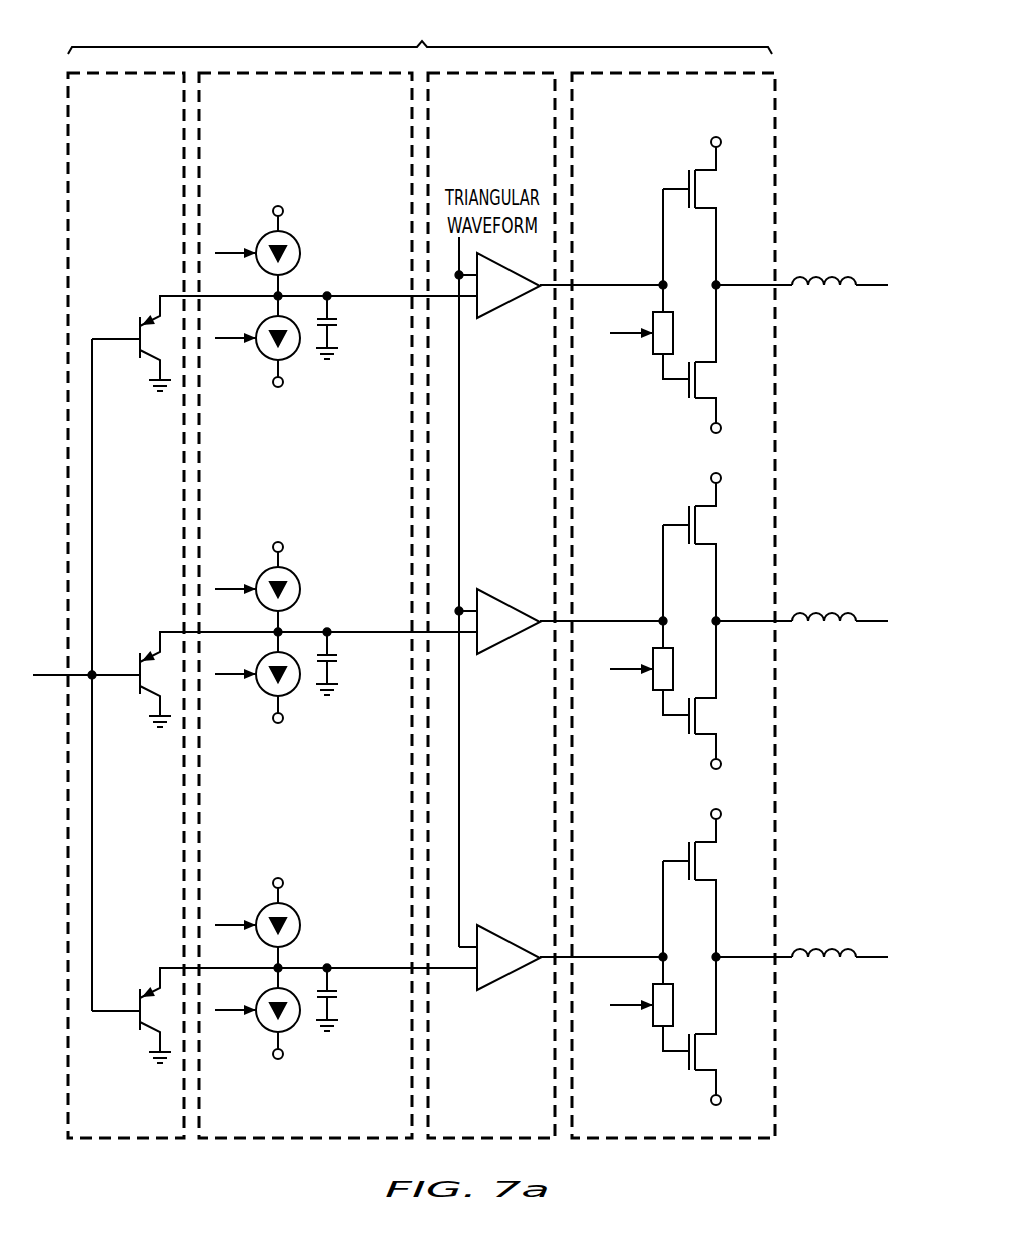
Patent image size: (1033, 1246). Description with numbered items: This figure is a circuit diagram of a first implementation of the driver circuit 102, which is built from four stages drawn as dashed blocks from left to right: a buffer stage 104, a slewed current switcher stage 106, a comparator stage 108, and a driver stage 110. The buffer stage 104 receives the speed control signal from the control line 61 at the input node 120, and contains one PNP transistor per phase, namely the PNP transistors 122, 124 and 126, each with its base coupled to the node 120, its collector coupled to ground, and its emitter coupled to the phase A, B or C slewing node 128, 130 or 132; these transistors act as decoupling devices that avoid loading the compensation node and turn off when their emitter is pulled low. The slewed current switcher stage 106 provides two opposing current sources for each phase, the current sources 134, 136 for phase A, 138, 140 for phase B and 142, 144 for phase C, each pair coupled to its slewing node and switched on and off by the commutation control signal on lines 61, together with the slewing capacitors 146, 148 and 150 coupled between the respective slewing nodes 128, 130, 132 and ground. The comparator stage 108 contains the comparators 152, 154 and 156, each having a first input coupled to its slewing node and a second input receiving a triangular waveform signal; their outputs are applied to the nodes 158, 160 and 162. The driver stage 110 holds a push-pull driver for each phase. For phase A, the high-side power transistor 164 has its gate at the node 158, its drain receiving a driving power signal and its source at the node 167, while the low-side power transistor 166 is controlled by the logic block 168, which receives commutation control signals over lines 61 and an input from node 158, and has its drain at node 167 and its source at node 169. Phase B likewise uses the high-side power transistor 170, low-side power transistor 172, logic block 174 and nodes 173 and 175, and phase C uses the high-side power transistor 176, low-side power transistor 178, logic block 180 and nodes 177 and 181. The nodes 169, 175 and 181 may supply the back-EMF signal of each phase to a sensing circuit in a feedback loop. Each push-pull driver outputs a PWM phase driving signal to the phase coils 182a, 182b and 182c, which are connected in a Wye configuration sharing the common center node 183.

The control line 61 is at (55, 678).
The driver circuit 102 is at (420, 34).
The buffer stage 104 is at (142, 114).
The slewed current switcher stage 106 is at (322, 114).
The comparator stage 108 is at (509, 114).
The driver stage 110 is at (690, 114).
The input node 120 is at (95, 680).
The PNP transistor 122 is at (143, 322).
The PNP transistor 124 is at (284, 666).
The PNP transistor 126 is at (279, 1015).
The phase A slewing node 128 is at (327, 290).
The phase B slewing node 130 is at (337, 615).
The phase C slewing node 132 is at (337, 951).
The current source 134 is at (292, 240).
The current source 136 is at (290, 356).
The current source 138 is at (273, 581).
The current source 140 is at (273, 682).
The current source 142 is at (273, 917).
The current source 144 is at (273, 1018).
The slewing capacitor 146 is at (340, 322).
The slewing capacitor 148 is at (356, 675).
The slewing capacitor 150 is at (356, 1011).
The comparator 152 is at (505, 306).
The comparator 154 is at (559, 639).
The comparator 156 is at (561, 975).
The node 158 is at (660, 283).
The node 160 is at (642, 586).
The node 162 is at (642, 922).
The high-side power transistor 164 is at (687, 182).
The low-side power transistor 166 is at (687, 388).
The node 167 is at (720, 283).
The logic block 168 is at (652, 318).
The node 169 is at (712, 431).
The high-side power transistor 170 is at (672, 547).
The low-side power transistor 172 is at (670, 690).
The node 173 is at (752, 599).
The logic block 174 is at (639, 672).
The node 175 is at (683, 772).
The high-side power transistor 176 is at (672, 883).
The node 177 is at (752, 935).
The low-side power transistor 178 is at (670, 1026).
The logic block 180 is at (639, 1008).
The node 181 is at (683, 1108).
The phase coil 182a is at (816, 268).
The phase coil 182b is at (824, 587).
The phase coil 182c is at (824, 923).
The common center node 183 is at (876, 288).